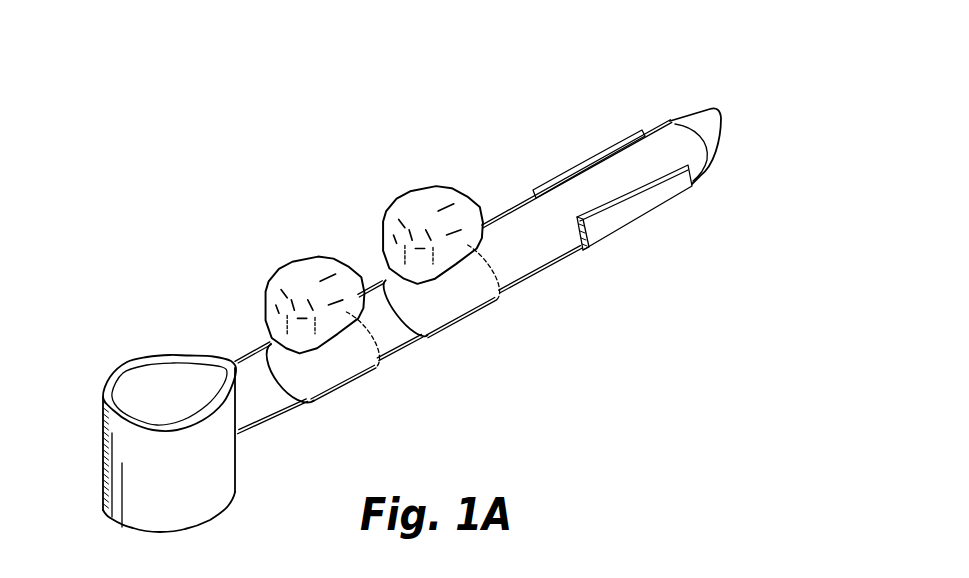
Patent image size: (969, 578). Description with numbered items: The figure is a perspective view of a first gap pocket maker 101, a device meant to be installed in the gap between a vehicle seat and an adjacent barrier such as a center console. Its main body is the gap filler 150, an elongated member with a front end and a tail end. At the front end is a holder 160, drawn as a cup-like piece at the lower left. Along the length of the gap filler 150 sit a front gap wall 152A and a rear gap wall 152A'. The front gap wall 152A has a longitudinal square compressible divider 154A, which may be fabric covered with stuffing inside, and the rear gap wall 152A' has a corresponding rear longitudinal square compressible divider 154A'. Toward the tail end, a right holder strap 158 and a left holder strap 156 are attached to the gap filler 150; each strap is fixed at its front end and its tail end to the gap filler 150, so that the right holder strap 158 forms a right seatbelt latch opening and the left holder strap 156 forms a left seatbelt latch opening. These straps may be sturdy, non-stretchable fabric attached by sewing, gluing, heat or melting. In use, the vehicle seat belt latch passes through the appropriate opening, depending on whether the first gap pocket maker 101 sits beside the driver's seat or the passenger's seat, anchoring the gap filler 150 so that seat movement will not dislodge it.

The first gap pocket maker 101 is at (411, 275).
The gap filler 150 is at (671, 140).
The front gap wall 152A is at (257, 265).
The rear gap wall 152A' is at (375, 199).
The longitudinal square compressible divider 154A is at (368, 356).
The rear longitudinal square compressible divider 154A' is at (501, 290).
The left holder strap 156 is at (648, 208).
The right holder strap 158 is at (603, 143).
The holder 160 is at (152, 323).